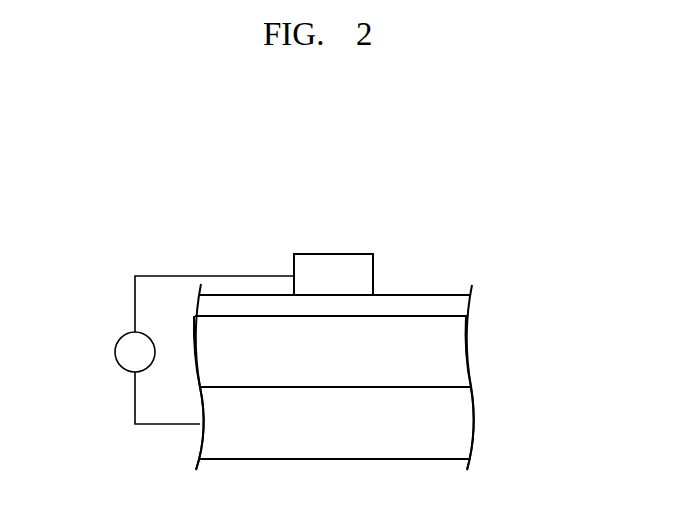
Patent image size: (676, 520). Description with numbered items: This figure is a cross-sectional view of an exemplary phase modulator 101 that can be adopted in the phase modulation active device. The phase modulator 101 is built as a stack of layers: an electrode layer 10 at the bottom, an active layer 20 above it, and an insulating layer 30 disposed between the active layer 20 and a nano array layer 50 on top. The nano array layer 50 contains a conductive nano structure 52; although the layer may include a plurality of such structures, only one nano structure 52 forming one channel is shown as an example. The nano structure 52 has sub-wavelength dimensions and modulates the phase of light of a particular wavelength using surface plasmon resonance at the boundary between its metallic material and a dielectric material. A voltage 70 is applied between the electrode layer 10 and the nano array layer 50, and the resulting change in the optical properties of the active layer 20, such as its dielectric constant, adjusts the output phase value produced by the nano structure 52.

The phase modulator 101 is at (489, 199).
The electrode layer 10 is at (455, 423).
The active layer 20 is at (455, 351).
The insulating layer 30 is at (455, 304).
The nano array layer 50 is at (379, 276).
The nano structure 52 is at (338, 265).
The voltage 70 is at (115, 351).